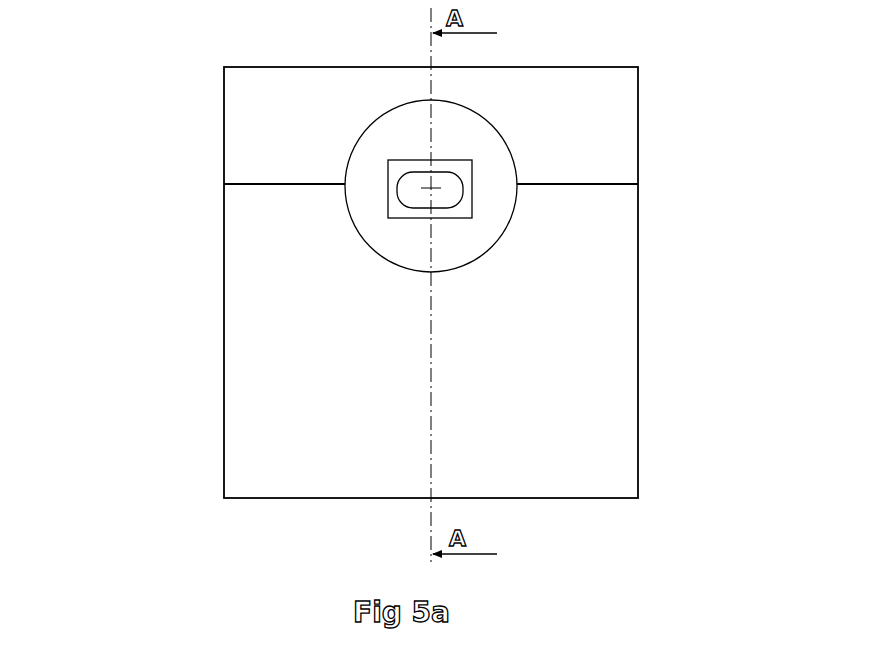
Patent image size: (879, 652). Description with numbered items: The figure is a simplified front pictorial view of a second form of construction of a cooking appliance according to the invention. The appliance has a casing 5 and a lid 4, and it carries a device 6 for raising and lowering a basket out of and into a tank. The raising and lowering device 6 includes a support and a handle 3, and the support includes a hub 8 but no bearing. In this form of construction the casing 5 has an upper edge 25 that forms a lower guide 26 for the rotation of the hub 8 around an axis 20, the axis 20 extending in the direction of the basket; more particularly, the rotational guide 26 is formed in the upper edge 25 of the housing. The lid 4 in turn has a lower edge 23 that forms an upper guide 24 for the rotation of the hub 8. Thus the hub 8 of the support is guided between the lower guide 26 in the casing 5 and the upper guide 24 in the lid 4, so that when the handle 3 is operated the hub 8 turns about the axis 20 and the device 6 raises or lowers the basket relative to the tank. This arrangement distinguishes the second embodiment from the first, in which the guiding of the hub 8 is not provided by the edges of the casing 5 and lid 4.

The lid 4 is at (590, 107).
The casing 5 is at (550, 358).
The device for raising and lowering a basket 6 is at (326, 129).
The upper guide 24 is at (418, 100).
The lower edge 23 is at (322, 152).
The hub 8 is at (364, 196).
The handle 3 is at (447, 190).
The axis 20 is at (432, 189).
The lower guide 26 is at (421, 268).
The upper edge 25 is at (408, 297).